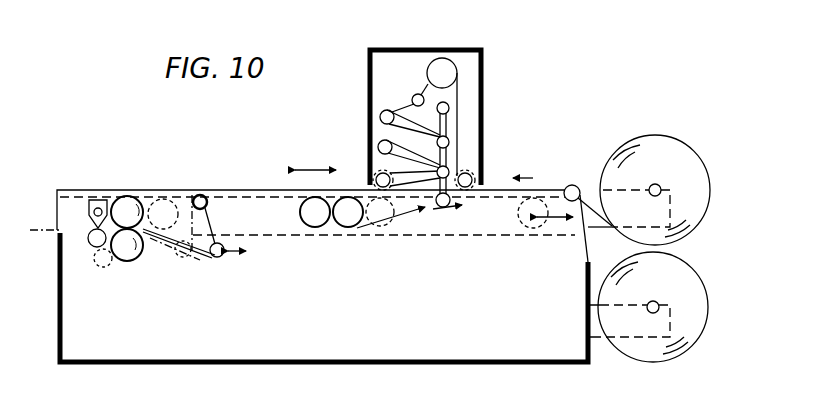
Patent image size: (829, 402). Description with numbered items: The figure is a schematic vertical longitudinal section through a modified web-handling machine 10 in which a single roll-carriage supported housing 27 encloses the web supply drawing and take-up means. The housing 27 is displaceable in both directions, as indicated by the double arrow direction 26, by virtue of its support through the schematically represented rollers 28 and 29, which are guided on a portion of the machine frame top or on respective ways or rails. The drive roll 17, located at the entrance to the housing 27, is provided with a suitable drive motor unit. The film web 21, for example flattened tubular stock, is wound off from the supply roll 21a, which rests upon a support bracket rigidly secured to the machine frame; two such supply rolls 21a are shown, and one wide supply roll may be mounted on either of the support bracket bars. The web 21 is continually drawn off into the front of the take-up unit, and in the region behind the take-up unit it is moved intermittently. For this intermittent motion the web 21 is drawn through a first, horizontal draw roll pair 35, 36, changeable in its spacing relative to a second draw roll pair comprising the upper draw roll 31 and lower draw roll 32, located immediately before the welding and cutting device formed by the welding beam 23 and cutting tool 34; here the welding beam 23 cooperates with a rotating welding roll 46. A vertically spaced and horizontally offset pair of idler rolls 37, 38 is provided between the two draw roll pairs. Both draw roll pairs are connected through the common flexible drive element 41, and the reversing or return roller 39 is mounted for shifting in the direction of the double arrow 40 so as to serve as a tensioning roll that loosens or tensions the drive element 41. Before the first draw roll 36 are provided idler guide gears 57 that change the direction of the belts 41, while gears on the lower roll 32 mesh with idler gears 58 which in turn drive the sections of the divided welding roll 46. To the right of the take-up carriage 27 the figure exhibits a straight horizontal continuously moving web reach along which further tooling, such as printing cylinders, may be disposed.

The tape handling apparatus 10 is at (190, 189).
The drive roll 17 is at (470, 192).
The film web 21 is at (256, 193).
The supply roll 21a is at (677, 162).
The welding beam 23 is at (93, 200).
The double arrow direction 26 is at (312, 168).
The housing 27 is at (426, 48).
The roller 28 is at (378, 175).
The roller 29 is at (470, 176).
The upper draw roll 31 is at (127, 202).
The lower draw roll 32 is at (127, 262).
The cutting tool 34 is at (163, 214).
The draw roll 35 is at (312, 226).
The draw roll 36 is at (352, 226).
The idler roll 37 is at (208, 205).
The idler roll 38 is at (220, 257).
The reversing or return roller 39 is at (537, 228).
The double arrow 40 is at (565, 215).
The common flexible drive element 41 is at (495, 238).
The welding roll 46 is at (90, 243).
The idler guide gear 57 is at (384, 226).
The idler gear 58 is at (103, 268).